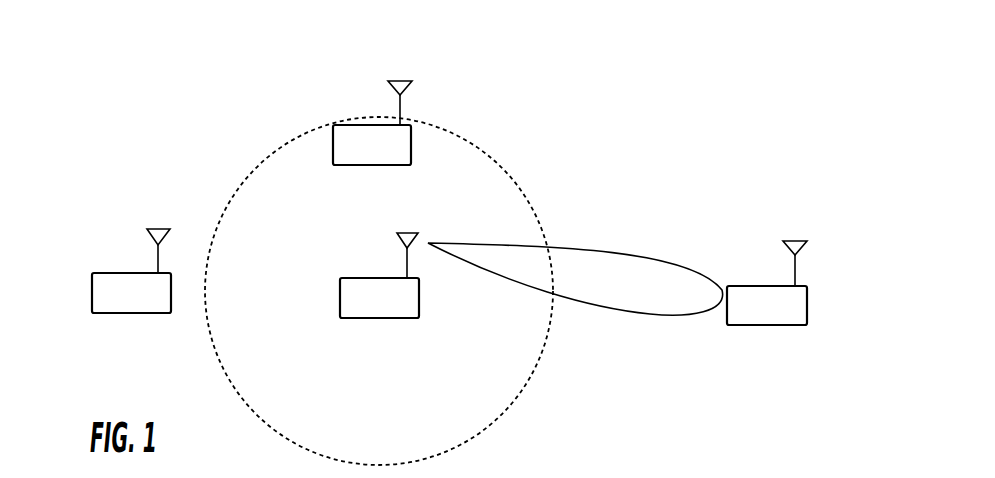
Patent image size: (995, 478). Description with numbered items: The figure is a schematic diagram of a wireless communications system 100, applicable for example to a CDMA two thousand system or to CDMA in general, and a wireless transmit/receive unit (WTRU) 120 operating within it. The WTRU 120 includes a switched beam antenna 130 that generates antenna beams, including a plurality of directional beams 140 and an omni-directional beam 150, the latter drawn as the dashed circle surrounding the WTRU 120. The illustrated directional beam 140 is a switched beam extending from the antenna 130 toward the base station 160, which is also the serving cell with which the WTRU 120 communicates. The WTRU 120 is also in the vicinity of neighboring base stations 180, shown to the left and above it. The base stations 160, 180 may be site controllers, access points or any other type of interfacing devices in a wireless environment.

The wireless communications system 100 is at (574, 79).
The wireless transmit/receive unit 120 is at (340, 295).
The switched beam antenna 130 is at (397, 242).
The directional beam 140 is at (587, 247).
The omni-directional beam 150 is at (507, 168).
The base station 160 is at (807, 302).
The neighboring base stations 180 is at (333, 143).